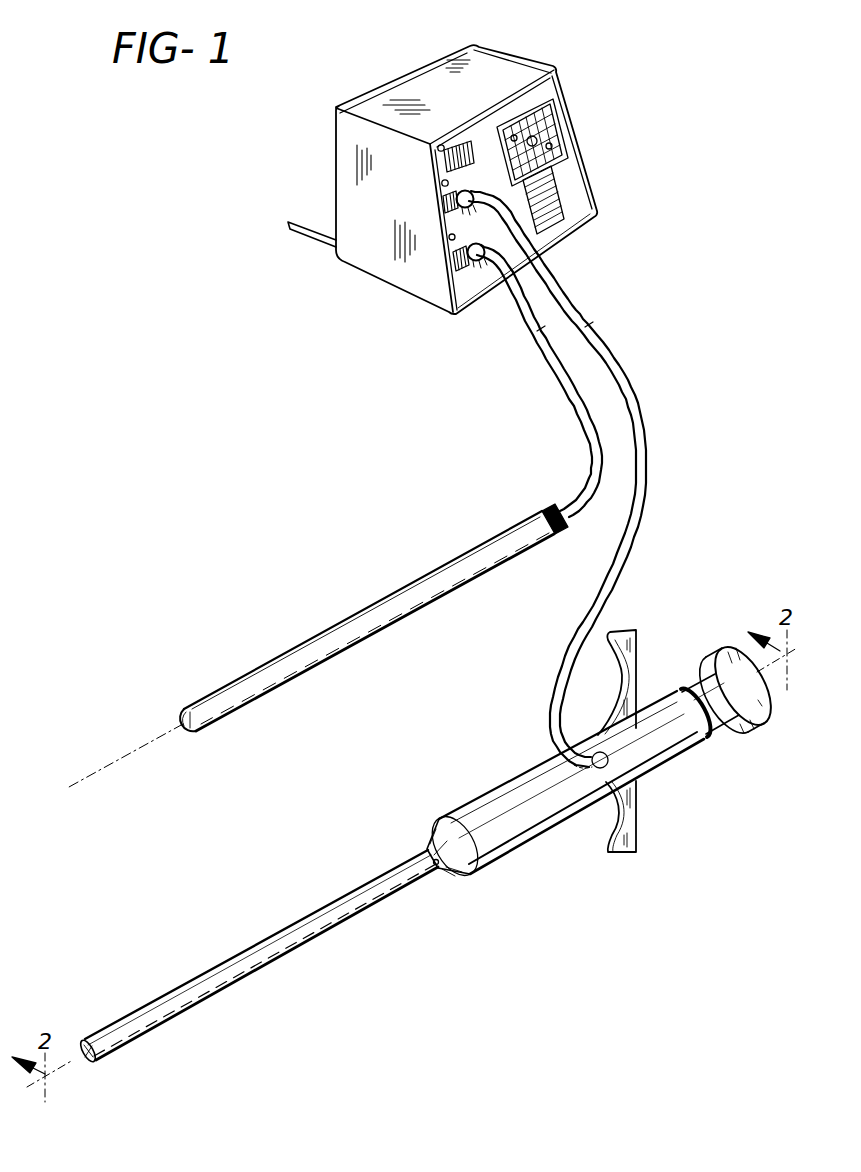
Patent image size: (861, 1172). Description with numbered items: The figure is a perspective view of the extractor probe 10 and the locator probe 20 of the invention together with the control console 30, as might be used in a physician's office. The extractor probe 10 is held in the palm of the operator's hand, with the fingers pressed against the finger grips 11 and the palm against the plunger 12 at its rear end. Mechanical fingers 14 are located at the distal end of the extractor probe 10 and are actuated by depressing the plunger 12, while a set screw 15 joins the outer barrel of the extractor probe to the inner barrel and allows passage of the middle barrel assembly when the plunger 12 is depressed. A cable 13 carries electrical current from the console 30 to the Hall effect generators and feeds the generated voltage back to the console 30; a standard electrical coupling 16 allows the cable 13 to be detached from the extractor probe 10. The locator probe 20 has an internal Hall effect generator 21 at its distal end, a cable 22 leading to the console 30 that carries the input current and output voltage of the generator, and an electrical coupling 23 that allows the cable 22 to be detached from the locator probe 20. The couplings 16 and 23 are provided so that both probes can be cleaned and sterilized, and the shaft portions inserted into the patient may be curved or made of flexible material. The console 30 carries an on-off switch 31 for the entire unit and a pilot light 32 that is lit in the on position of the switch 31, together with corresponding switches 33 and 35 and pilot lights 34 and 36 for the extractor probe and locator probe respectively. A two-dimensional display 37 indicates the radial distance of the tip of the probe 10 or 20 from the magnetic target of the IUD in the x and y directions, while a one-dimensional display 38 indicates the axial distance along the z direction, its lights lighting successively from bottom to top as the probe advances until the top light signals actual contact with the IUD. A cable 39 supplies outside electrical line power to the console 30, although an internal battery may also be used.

The extractor probe 10 is at (498, 797).
The finger grips 11 is at (625, 626).
The plunger 12 is at (706, 660).
The cable 13 is at (622, 538).
The mechanical fingers 14 is at (94, 1059).
The set screw 15 is at (435, 867).
The coupling 16 is at (590, 763).
The locator probe 20 is at (398, 604).
The Hall effect generator 21 is at (218, 727).
The cable 22 is at (580, 486).
The electrical coupling 23 is at (565, 517).
The console 30 is at (553, 66).
The on-off switch 31 is at (472, 145).
The pilot light 32 is at (441, 143).
The switch 33 is at (443, 188).
The pilot light 34 is at (440, 204).
The switch 35 is at (481, 264).
The pilot light 36 is at (450, 272).
The 2-dimensional display 37 is at (558, 128).
The 1-dimensional display 38 is at (566, 210).
The cable 39 is at (294, 232).